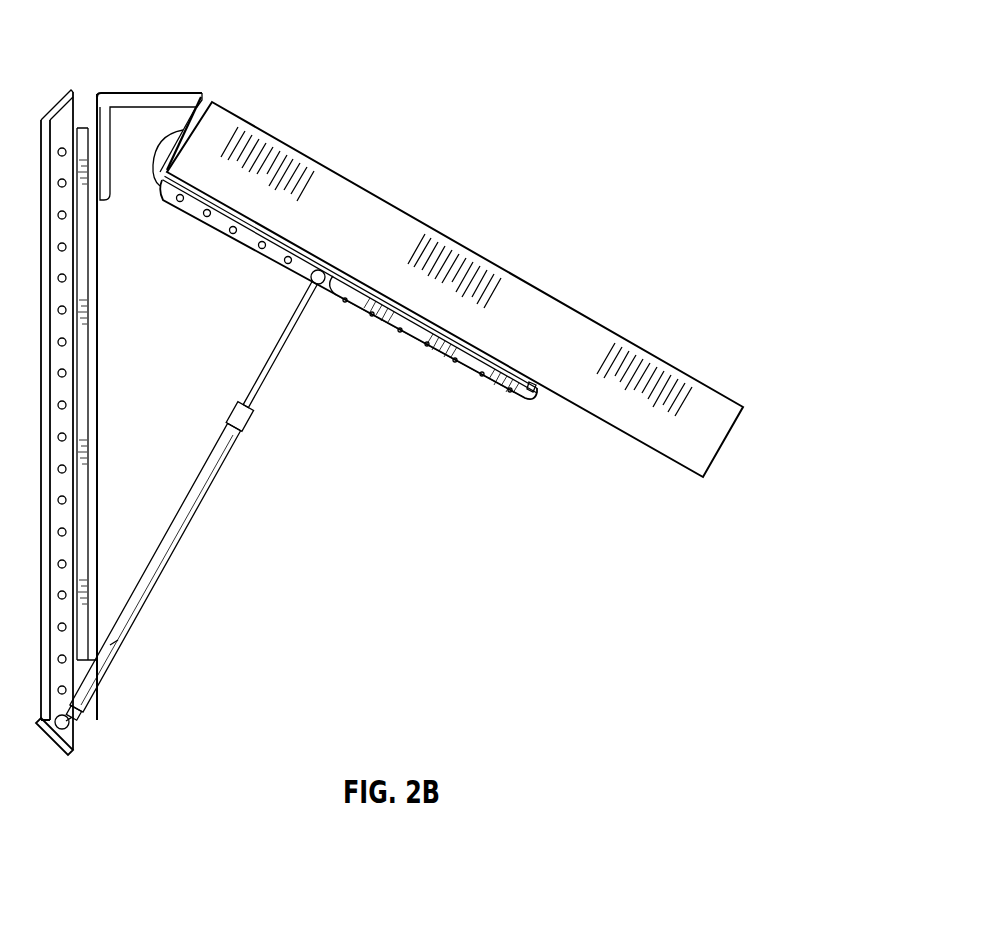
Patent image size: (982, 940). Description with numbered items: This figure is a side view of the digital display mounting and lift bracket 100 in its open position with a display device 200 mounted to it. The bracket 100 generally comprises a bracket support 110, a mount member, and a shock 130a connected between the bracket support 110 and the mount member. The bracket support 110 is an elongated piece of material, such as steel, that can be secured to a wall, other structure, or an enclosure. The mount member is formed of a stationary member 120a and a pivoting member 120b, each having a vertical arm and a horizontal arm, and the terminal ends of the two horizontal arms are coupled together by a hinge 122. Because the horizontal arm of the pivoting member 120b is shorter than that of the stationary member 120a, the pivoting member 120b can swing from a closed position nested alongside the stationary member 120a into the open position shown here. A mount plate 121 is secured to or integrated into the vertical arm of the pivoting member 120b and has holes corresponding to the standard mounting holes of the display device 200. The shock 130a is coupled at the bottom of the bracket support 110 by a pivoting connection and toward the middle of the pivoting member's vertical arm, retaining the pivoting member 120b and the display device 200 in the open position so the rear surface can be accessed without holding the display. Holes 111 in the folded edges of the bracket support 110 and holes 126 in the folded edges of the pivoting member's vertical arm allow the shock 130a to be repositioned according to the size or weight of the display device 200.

The digital display mounting and lift bracket 100 is at (583, 72).
The bracket support 110 is at (73, 735).
The holes 111 is at (116, 645).
The stationary member 120a is at (98, 393).
The pivoting member 120b is at (410, 345).
The mount plate 121 is at (540, 400).
The hinge 122 is at (200, 93).
The holes 126 is at (220, 233).
The shock 130a is at (183, 533).
The display device 200 is at (425, 245).